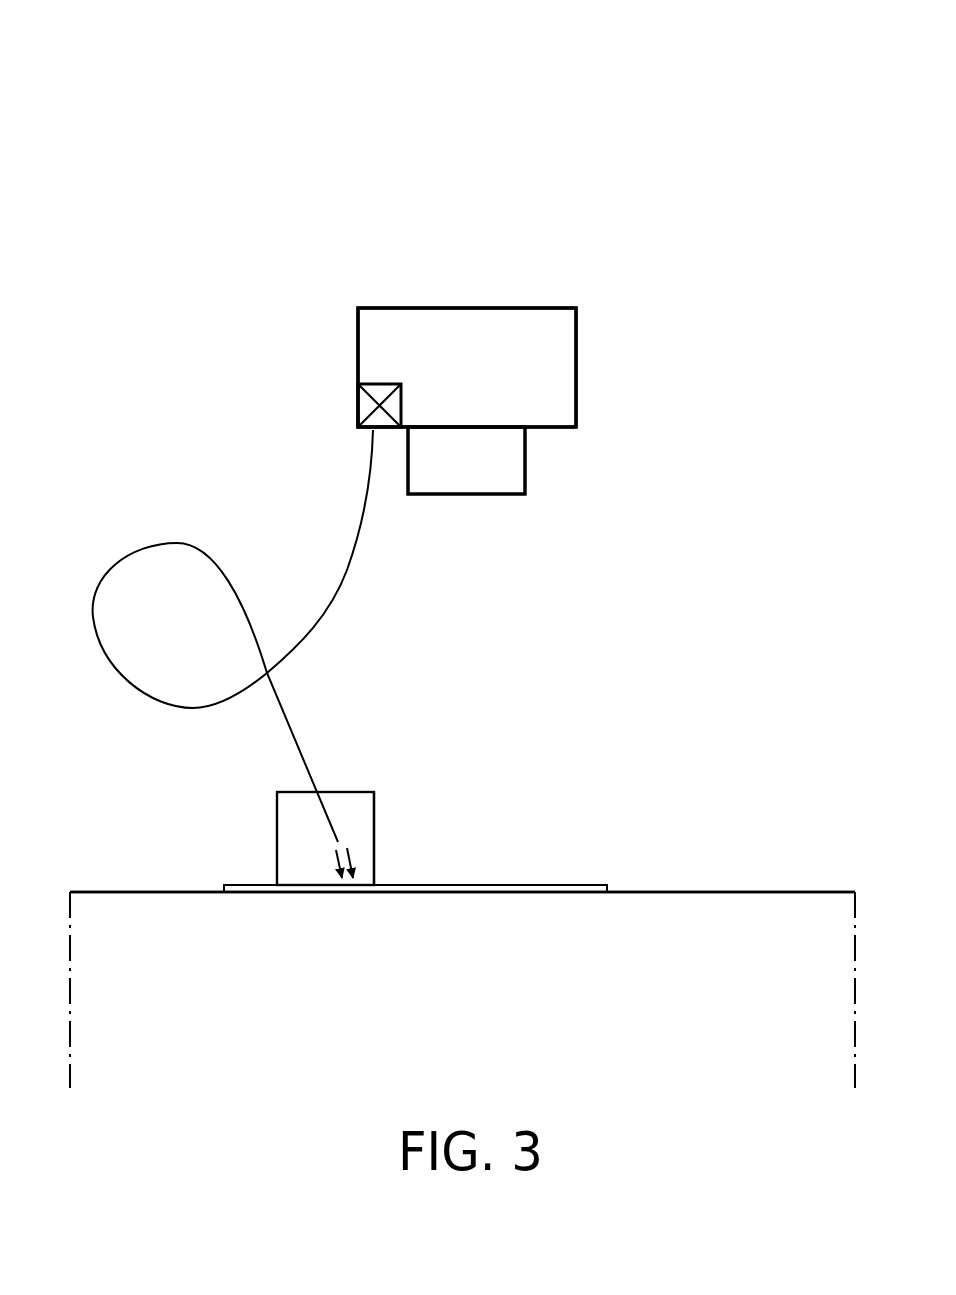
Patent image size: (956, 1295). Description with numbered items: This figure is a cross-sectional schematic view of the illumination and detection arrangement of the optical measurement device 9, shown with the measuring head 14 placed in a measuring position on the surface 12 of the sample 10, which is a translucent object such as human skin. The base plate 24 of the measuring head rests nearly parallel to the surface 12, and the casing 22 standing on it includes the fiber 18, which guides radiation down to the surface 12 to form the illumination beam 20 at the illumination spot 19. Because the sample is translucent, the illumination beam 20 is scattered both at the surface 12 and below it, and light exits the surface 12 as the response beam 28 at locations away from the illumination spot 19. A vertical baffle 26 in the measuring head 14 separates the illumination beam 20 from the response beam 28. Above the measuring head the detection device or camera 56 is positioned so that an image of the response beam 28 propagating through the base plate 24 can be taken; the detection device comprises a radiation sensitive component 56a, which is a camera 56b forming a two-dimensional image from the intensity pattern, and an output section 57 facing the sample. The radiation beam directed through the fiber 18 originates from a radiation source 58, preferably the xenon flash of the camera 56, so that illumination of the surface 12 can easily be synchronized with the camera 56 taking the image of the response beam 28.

The optical measurement device 9 is at (233, 216).
The sample 10 is at (333, 989).
The surface 12 is at (724, 893).
The measuring head 14 is at (429, 756).
The fiber 18 is at (178, 541).
The illumination spot 19 is at (200, 339).
The illumination beam 20 is at (330, 860).
The casing 22 is at (352, 790).
The base plate 24 is at (560, 884).
The vertical baffle 26 is at (376, 838).
The response beam 28 is at (459, 570).
The camera 56 is at (531, 78).
The radiation sensitive component 56a is at (511, 208).
The camera 56b is at (537, 307).
The output port 57 is at (503, 496).
The radiation source 58 is at (362, 405).